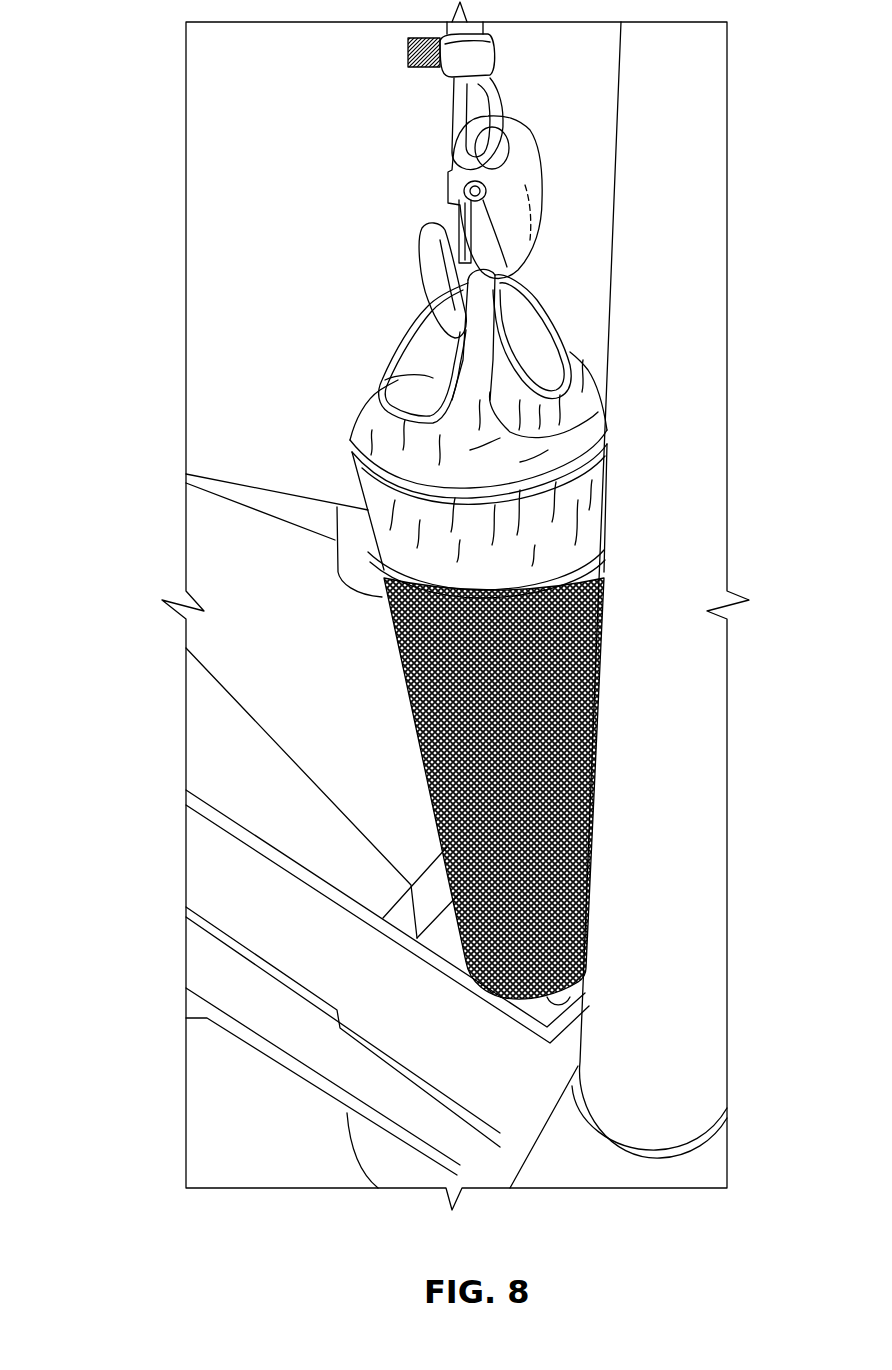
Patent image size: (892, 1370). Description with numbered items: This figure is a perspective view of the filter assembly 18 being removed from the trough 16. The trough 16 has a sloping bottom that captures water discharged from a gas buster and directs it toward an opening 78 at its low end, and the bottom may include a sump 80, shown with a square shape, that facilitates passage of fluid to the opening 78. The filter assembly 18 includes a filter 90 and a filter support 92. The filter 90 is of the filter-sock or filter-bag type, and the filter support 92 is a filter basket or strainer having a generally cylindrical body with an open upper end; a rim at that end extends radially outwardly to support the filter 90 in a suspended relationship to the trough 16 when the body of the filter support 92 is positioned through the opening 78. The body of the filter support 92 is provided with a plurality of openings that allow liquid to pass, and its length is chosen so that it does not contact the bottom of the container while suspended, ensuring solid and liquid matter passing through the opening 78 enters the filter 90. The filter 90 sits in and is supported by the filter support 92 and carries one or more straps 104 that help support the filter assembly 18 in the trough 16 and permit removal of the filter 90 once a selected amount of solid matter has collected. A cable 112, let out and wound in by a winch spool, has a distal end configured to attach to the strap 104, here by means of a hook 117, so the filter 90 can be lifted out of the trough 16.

The trough 16 is at (206, 877).
The filter assembly 18 is at (390, 622).
The opening 78 is at (545, 1007).
The sump 80 is at (398, 915).
The filter 90 is at (367, 493).
The filter support 92 is at (410, 667).
The straps 104 is at (410, 333).
The cable 112 is at (492, 88).
The hook 117 is at (520, 197).